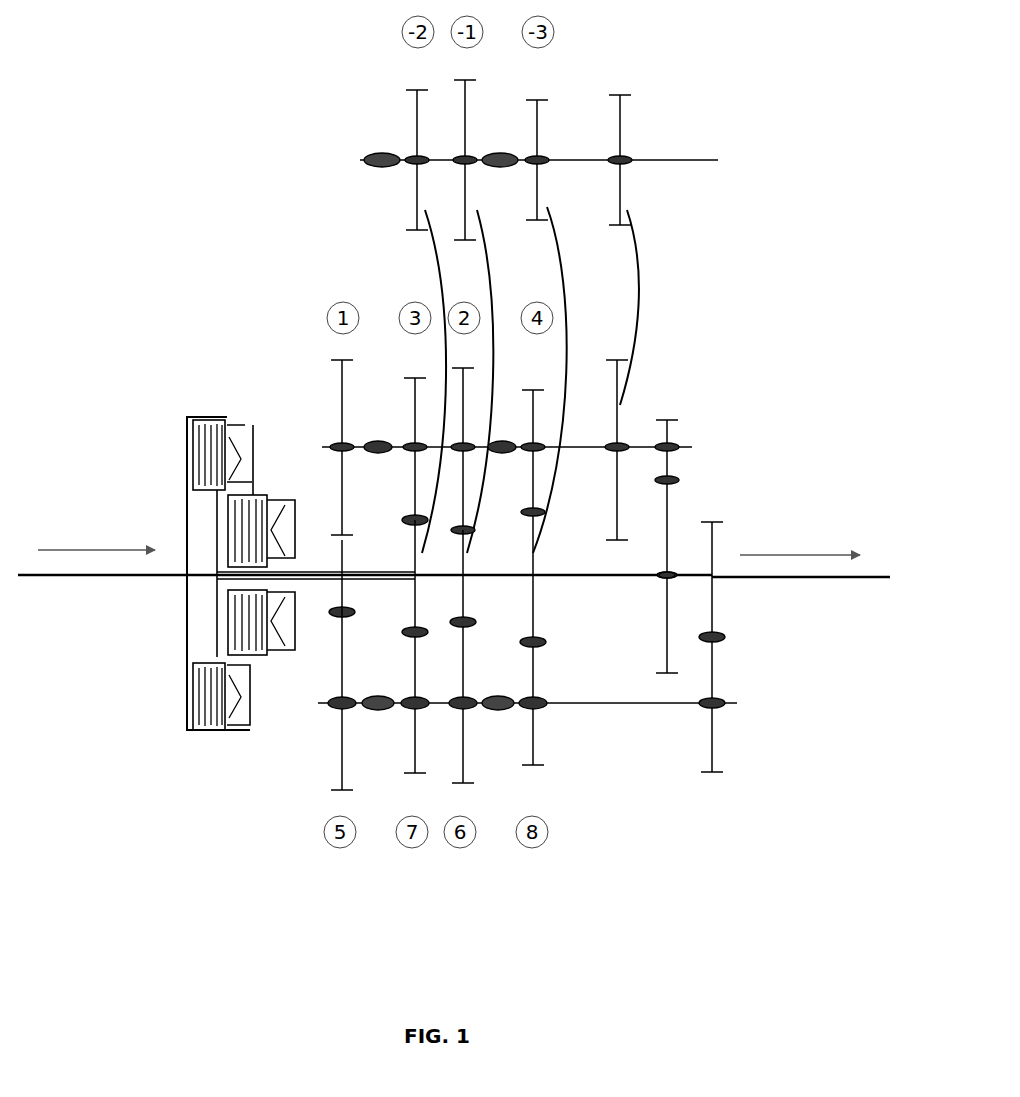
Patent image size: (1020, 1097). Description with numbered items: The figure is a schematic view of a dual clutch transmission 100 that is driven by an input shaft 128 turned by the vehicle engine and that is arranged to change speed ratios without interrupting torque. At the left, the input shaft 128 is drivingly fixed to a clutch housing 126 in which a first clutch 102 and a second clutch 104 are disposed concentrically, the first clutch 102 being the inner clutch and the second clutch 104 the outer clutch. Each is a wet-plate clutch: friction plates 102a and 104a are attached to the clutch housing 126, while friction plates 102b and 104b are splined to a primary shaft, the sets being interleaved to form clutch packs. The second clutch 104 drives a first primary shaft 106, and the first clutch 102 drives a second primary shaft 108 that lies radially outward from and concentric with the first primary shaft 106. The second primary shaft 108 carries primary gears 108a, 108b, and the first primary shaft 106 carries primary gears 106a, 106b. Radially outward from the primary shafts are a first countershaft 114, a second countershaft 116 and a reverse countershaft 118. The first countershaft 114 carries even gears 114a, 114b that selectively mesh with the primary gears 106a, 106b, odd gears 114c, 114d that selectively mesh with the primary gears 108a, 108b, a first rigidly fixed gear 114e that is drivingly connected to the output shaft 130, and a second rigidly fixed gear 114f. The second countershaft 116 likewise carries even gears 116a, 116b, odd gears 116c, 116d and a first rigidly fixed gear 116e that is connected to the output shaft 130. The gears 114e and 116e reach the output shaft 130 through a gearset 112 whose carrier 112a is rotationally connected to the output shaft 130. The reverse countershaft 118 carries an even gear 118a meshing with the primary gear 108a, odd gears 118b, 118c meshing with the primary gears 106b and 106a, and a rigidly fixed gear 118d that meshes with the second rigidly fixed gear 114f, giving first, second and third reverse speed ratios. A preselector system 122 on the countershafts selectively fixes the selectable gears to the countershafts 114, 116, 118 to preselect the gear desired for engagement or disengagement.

The dual clutch transmission 100 is at (158, 250).
The first clutch 102 is at (218, 491).
The friction plates 102a is at (241, 455).
The friction plates 102b is at (232, 530).
The second clutch 104 is at (197, 682).
The friction plates 104a is at (203, 675).
The friction plates 104b is at (193, 703).
The first primary shaft 106 is at (449, 581).
The primary gear 106a is at (532, 627).
The primary gear 106b is at (467, 609).
The second primary shaft 108 is at (323, 582).
The primary gear 108a is at (425, 538).
The primary gear 108b is at (345, 577).
The gearset 112 is at (645, 612).
The carrier 112a is at (690, 572).
The first countershaft 114 is at (528, 447).
The even gear 114a is at (545, 475).
The even gear 114b is at (470, 451).
The odd gear 114c is at (419, 449).
The odd gear 114d is at (348, 447).
The first rigidly fixed gear 114e is at (672, 530).
The second rigidly fixed gear 114f is at (615, 450).
The second countershaft 116 is at (551, 703).
The even gear 116a is at (535, 662).
The even gear 116b is at (468, 656).
The odd gear 116c is at (407, 646).
The odd gear 116d is at (340, 665).
The first rigidly fixed gear 116e is at (718, 647).
The reverse countershaft 118 is at (584, 167).
The even gear 118a is at (415, 321).
The odd gear 118b is at (471, 316).
The odd gear 118c is at (539, 326).
The rigidly fixed gear 118d is at (630, 250).
The preselector system 122 is at (375, 150).
The clutch housing 126 is at (185, 465).
The input shaft 128 is at (102, 581).
The output shaft 130 is at (823, 585).